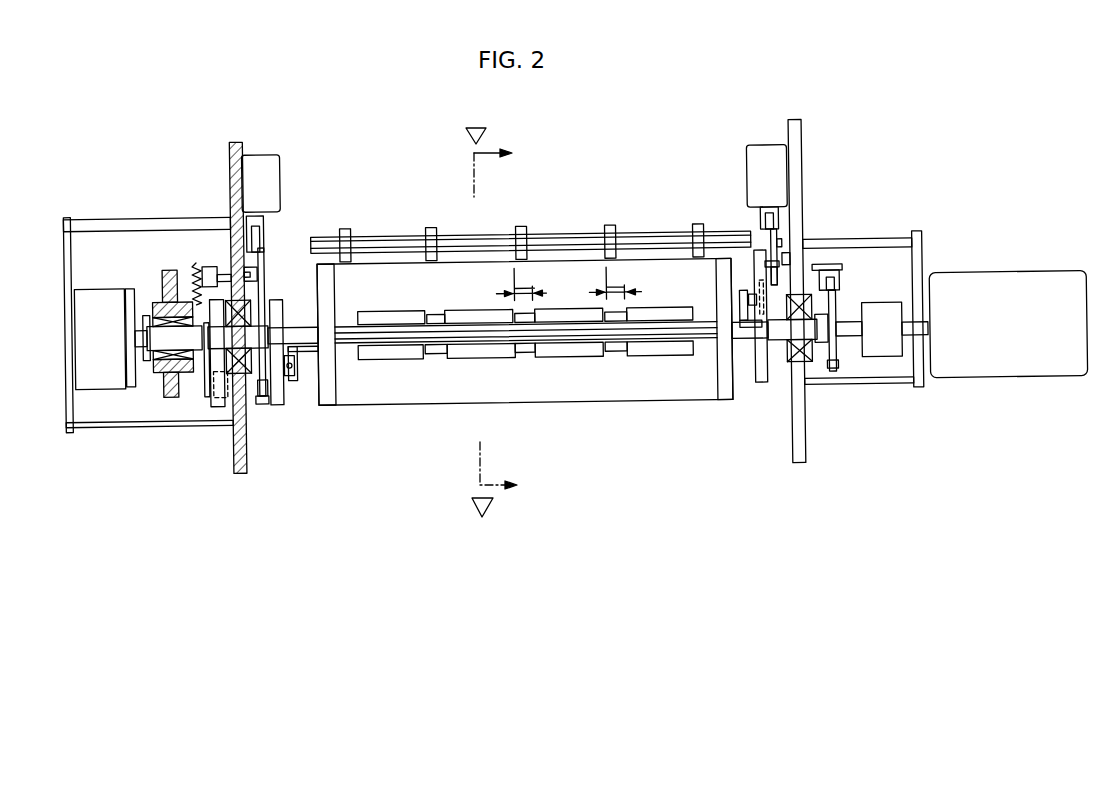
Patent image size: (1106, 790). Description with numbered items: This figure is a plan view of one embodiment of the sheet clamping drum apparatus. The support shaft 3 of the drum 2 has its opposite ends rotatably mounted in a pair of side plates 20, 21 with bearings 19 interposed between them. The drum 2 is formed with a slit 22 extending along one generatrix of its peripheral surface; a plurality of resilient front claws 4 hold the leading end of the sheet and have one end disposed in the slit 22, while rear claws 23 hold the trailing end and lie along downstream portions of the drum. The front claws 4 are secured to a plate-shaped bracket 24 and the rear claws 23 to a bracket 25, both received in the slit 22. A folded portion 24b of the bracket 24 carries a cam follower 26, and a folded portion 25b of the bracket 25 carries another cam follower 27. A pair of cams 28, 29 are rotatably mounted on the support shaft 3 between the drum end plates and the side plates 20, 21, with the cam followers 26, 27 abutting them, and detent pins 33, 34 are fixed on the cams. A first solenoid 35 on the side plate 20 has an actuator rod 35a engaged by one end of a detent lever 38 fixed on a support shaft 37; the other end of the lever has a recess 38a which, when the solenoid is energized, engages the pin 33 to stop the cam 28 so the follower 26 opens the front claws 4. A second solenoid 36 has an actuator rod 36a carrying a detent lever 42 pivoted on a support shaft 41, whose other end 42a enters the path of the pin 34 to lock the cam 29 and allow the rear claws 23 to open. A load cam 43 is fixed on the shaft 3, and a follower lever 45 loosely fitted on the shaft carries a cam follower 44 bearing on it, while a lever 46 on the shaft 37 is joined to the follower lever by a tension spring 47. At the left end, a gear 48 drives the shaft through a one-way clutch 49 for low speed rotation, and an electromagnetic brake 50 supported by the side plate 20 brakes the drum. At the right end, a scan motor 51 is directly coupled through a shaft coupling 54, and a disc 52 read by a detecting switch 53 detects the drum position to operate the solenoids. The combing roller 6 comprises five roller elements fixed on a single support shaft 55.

The drum 2 is at (588, 402).
The support shaft 3 is at (290, 324).
The front claws 4 is at (428, 357).
The combing roller 6 is at (347, 226).
The bearings 19 is at (236, 400).
The side plate 20 is at (232, 150).
The side plate 21 is at (804, 136).
The slit 22 is at (365, 357).
The rear claws 23 is at (388, 309).
The bracket 24 is at (527, 352).
The folded portion 24b is at (298, 362).
The bracket 25 is at (436, 320).
The folded portion 25b is at (740, 301).
The cam follower 26 is at (290, 372).
The cam follower 27 is at (760, 286).
The cam 28 is at (277, 296).
The cam 29 is at (760, 386).
The detent pin 33 is at (266, 400).
The detent pin 34 is at (810, 256).
The first solenoid 35 is at (275, 152).
The actuator rod 35a is at (265, 226).
The second solenoid 36 is at (762, 150).
The actuator rod 36a is at (781, 212).
The support shaft 37 is at (250, 264).
The detent lever 38 is at (263, 276).
The recess 38a is at (260, 392).
The support shaft 41 is at (780, 240).
The detent lever 42 is at (791, 262).
The other end of detent lever 42a is at (768, 264).
The load cam 43 is at (220, 402).
The cam follower 44 is at (215, 392).
The follower lever 45 is at (206, 368).
The lever 46 is at (197, 258).
The tension spring 47 is at (203, 270).
The gear 48 is at (168, 378).
The one-way clutch 49 is at (144, 312).
The electromagnetic brake 50 is at (100, 412).
The scan motor 51 is at (986, 278).
The disc 52 is at (836, 372).
The detecting switch 53 is at (843, 271).
The shaft coupling 54 is at (888, 361).
The support shaft 55 is at (572, 234).